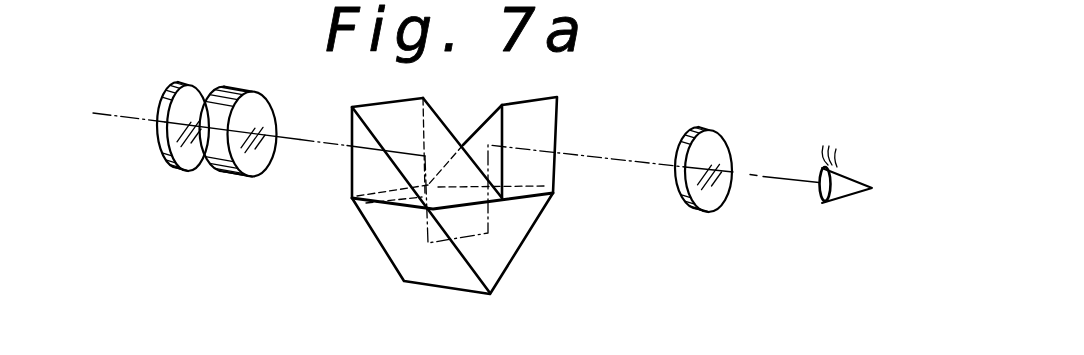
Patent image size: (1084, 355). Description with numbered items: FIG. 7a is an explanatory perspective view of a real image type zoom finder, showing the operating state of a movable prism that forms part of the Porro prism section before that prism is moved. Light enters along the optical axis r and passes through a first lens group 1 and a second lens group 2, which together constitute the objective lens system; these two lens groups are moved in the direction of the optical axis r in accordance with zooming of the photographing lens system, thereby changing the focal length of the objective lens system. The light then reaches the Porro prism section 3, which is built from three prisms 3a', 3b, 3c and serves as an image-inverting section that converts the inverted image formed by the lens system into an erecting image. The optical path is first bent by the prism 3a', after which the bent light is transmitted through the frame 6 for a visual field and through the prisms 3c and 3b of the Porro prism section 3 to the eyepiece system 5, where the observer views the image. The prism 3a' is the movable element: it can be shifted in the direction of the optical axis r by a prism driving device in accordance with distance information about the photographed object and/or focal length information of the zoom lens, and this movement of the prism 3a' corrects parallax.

The optical axis r is at (126, 124).
The first lens group 1 is at (190, 152).
The second lens group 2 is at (218, 168).
The Porro prism section 3 is at (458, 208).
The prism 3a' is at (395, 195).
The prism 3b is at (546, 123).
The prism 3c is at (410, 265).
The frame for a visual field 6 is at (392, 205).
The eyepiece system 5 is at (714, 143).